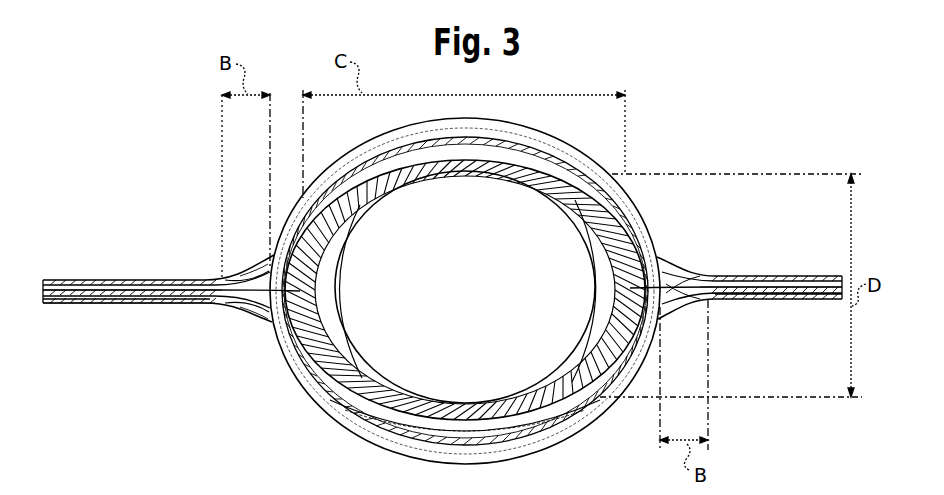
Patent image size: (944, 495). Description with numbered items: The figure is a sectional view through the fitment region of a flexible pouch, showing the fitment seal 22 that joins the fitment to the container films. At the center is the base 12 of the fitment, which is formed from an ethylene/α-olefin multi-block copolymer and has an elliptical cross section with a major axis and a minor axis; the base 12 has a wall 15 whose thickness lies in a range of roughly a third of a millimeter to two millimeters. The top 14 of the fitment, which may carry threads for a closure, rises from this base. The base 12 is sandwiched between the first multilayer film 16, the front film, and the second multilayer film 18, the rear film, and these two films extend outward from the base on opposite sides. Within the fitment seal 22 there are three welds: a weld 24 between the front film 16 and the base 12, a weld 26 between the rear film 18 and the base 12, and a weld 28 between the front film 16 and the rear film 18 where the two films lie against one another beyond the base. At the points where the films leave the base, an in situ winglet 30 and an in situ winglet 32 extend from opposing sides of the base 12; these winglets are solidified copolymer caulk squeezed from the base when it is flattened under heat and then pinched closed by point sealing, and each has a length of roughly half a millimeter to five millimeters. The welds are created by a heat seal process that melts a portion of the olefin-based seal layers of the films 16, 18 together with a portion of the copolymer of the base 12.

The base 12 is at (590, 260).
The top 14 is at (344, 301).
The wall 15 is at (510, 394).
The first multilayer film 16 is at (128, 279).
The second multilayer film 18 is at (129, 306).
The fitment seal 22 is at (724, 113).
The weld 24 is at (426, 147).
The weld 26 is at (330, 419).
The weld 28 is at (175, 306).
The in situ winglet 30 is at (242, 309).
The in situ winglet 32 is at (676, 267).